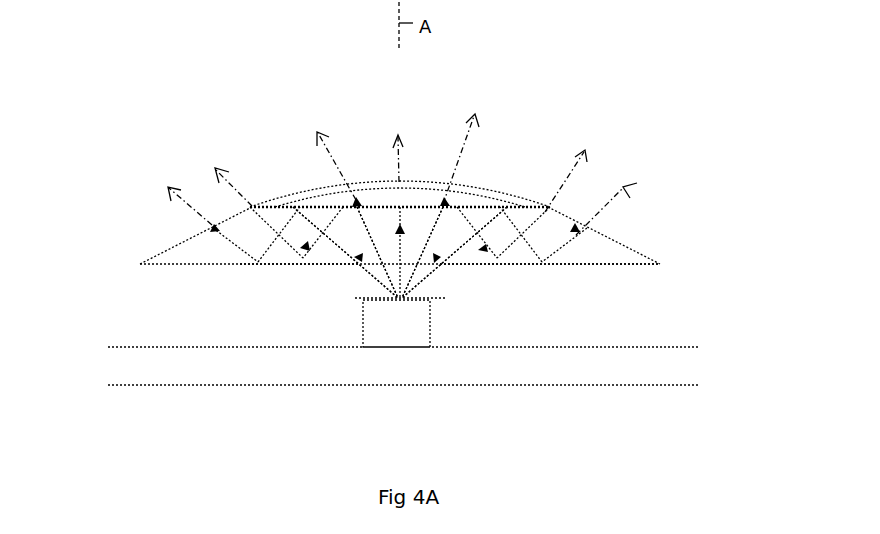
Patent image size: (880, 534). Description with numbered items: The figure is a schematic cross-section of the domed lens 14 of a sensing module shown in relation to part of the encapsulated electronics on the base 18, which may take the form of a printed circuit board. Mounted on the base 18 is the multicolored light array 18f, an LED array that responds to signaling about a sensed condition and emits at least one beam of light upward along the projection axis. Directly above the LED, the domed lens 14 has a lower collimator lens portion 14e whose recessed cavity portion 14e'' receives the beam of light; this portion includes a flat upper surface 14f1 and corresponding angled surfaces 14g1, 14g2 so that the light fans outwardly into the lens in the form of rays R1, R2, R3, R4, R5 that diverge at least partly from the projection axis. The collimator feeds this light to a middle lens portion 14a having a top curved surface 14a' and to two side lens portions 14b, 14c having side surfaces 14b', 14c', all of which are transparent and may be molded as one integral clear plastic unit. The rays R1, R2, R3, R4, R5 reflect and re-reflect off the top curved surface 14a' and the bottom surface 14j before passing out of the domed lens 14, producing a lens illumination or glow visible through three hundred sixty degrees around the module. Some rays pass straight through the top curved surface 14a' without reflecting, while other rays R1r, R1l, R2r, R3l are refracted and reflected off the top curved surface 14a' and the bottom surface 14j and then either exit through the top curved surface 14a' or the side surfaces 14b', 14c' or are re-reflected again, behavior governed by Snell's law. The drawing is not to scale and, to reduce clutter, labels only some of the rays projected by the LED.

The domed lens 14 is at (574, 206).
The middle lens portion 14a is at (400, 140).
The top curved surface 14a' is at (400, 158).
The side lens portion 14b is at (169, 215).
The side surface 14b' is at (169, 232).
The side lens portion 14c is at (661, 234).
The side surface 14c' is at (629, 245).
The lower collimator lens portion 14e is at (351, 360).
The recessed cavity portion 14e'' is at (473, 268).
The flat upper surface 14f1 is at (353, 277).
The angled surface 14g1 is at (467, 263).
The angled surface 14g2 is at (345, 287).
The bottom surface 14j is at (597, 266).
The base 18 is at (545, 372).
The multicolored light array 18f is at (432, 331).
The light ray R1 is at (397, 225).
The light ray R2 is at (441, 207).
The light ray R3 is at (306, 243).
The light ray R4 is at (431, 257).
The light ray R5 is at (363, 255).
The light ray R1l is at (211, 251).
The light ray R3l is at (305, 243).
The light ray R2r is at (519, 210).
The light ray R1r is at (583, 227).